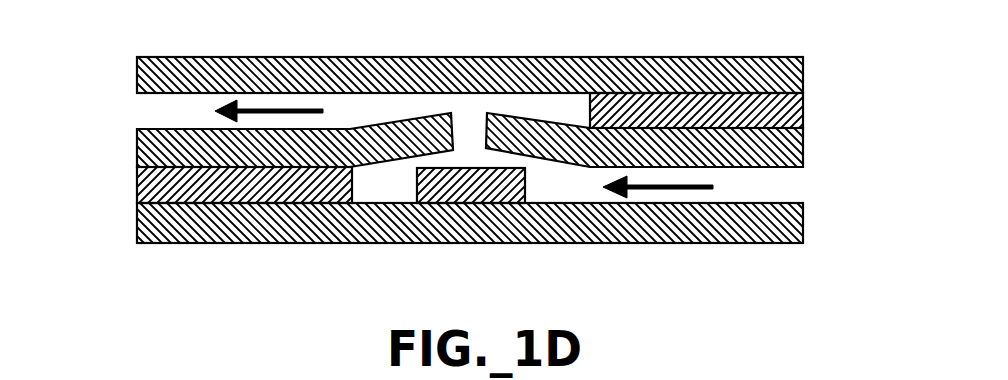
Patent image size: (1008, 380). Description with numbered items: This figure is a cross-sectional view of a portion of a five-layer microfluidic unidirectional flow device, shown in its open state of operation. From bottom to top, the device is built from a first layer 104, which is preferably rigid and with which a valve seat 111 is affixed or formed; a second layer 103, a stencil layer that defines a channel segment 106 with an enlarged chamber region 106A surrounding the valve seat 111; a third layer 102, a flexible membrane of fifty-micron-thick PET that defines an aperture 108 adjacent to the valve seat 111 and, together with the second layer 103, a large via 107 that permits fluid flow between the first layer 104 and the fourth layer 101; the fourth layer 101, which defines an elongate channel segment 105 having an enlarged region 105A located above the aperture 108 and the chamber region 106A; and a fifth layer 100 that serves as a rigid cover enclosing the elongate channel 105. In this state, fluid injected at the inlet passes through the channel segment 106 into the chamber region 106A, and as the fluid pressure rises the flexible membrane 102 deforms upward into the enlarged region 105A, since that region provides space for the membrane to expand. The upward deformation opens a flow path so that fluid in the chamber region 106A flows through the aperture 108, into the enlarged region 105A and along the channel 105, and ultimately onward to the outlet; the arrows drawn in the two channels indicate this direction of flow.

The fifth layer 100 is at (787, 57).
The fourth layer 101 is at (803, 112).
The third layer 102 is at (803, 152).
The second layer 103 is at (137, 188).
The first layer 104 is at (137, 221).
The elongate channel segment 105 is at (140, 112).
The enlarged region 105A is at (375, 106).
The channel segment 106 is at (783, 190).
The enlarged chamber region 106A is at (548, 184).
The via 107 is at (513, 130).
The aperture 108 is at (462, 130).
The valve seat 111 is at (414, 187).